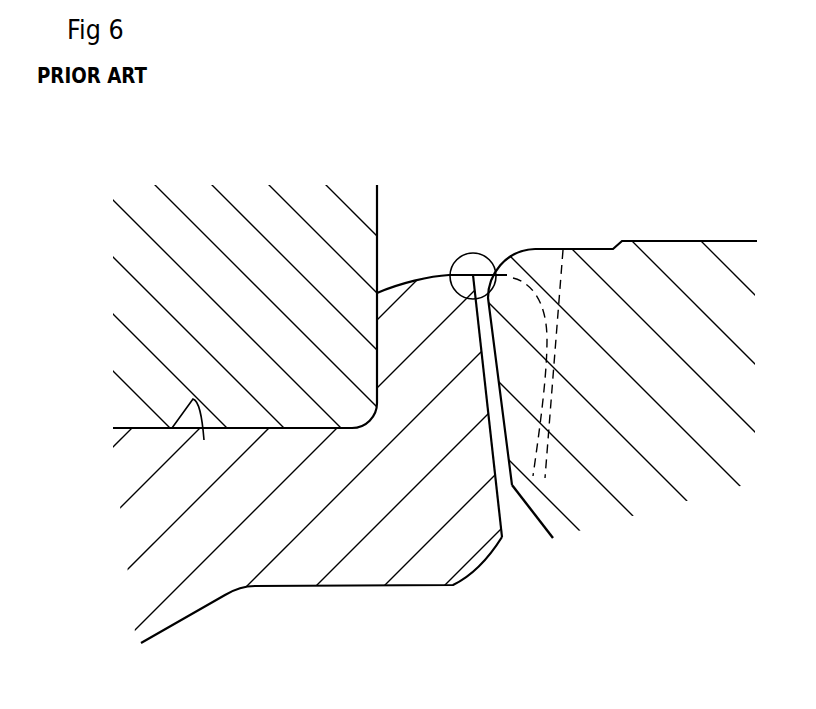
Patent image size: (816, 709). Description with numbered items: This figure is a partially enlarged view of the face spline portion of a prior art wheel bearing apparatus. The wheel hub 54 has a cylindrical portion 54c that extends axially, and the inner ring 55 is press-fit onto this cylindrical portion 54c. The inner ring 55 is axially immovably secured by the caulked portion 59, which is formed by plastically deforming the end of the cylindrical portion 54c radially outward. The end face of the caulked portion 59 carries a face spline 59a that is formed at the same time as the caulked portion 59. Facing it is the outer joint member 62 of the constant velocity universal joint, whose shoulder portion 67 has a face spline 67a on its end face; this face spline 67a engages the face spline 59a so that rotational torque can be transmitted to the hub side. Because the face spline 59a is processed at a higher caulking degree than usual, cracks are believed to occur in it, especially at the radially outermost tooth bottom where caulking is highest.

The wheel hub 54 is at (140, 538).
The cylindrical portion 54c is at (205, 500).
The inner ring 55 is at (242, 207).
The caulked portion 59 is at (427, 300).
The face spline 59a is at (507, 307).
The outer joint member 62 is at (597, 225).
The shoulder portion 67 is at (601, 600).
The face spline 67a is at (528, 607).